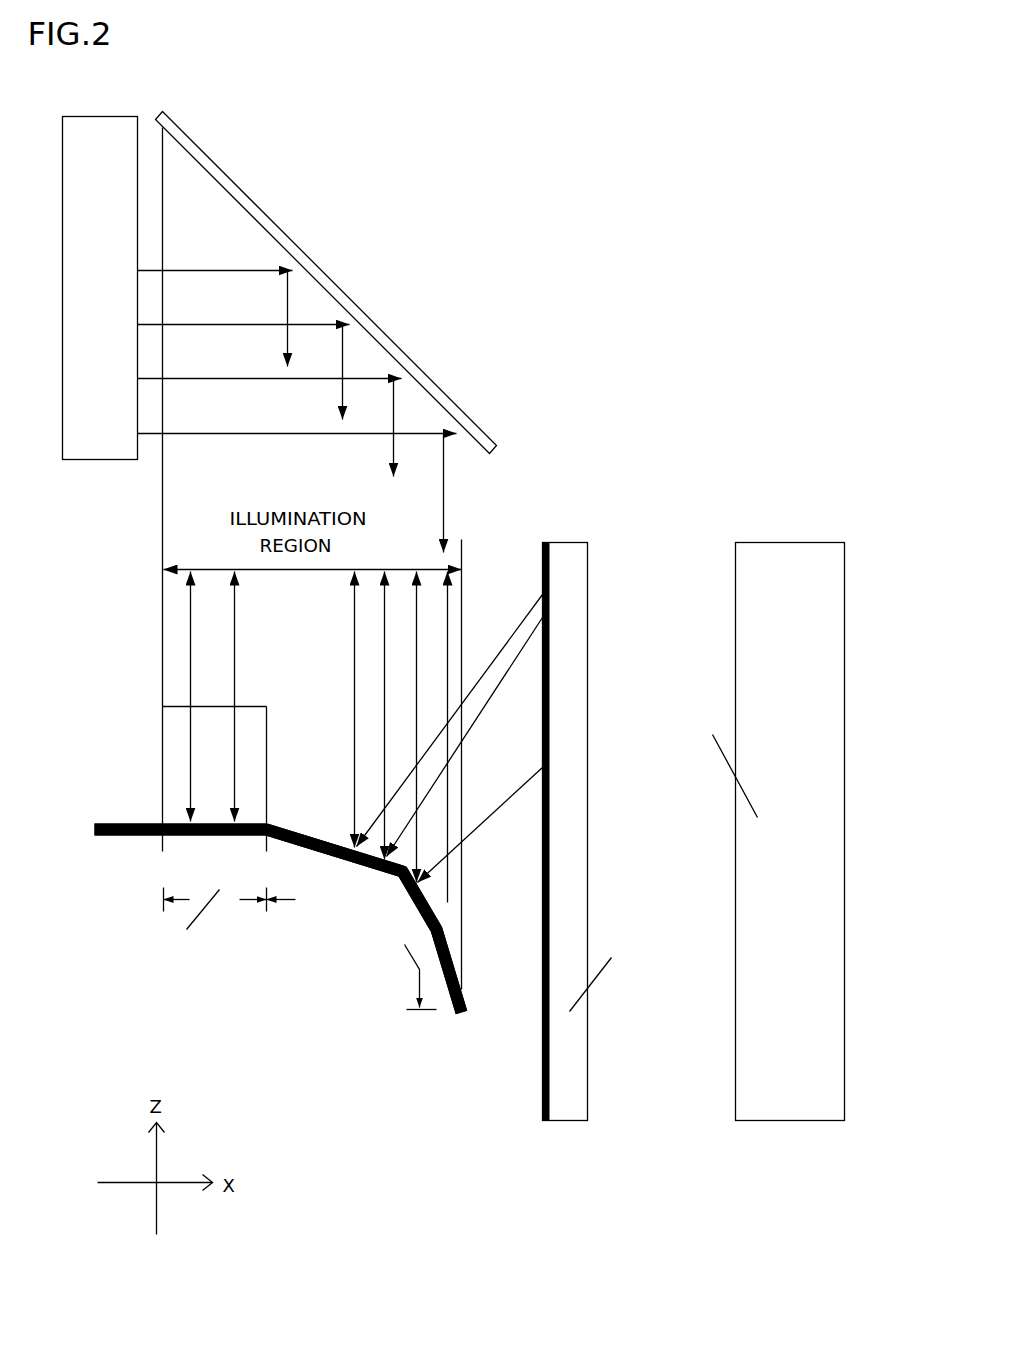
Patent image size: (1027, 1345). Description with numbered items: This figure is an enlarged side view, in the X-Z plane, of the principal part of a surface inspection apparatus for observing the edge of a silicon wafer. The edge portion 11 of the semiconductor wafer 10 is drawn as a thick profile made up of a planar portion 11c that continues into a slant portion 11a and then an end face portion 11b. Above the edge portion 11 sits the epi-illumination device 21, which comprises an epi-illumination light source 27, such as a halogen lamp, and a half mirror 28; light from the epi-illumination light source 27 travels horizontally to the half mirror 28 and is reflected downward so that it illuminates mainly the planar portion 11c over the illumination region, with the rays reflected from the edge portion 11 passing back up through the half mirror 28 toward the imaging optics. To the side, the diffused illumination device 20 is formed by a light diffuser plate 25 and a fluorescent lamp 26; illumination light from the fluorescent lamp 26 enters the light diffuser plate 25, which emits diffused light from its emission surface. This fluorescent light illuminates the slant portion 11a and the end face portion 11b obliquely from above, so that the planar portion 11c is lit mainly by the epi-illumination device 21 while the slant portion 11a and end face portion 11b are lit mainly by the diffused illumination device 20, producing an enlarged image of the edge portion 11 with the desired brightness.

The semiconductor wafer 10 is at (186, 1037).
The edge portion 11 is at (398, 980).
The slant portion 11a is at (288, 833).
The end face portion 11b is at (465, 993).
The planar portion 11c is at (108, 825).
The diffused illumination device 20 is at (813, 1188).
The epi-illumination device 21 is at (362, 97).
The light diffuser plate 25 is at (562, 1123).
The fluorescent lamp 26 is at (787, 1123).
The epi-illumination light source 27 is at (137, 240).
The half mirror 28 is at (318, 268).